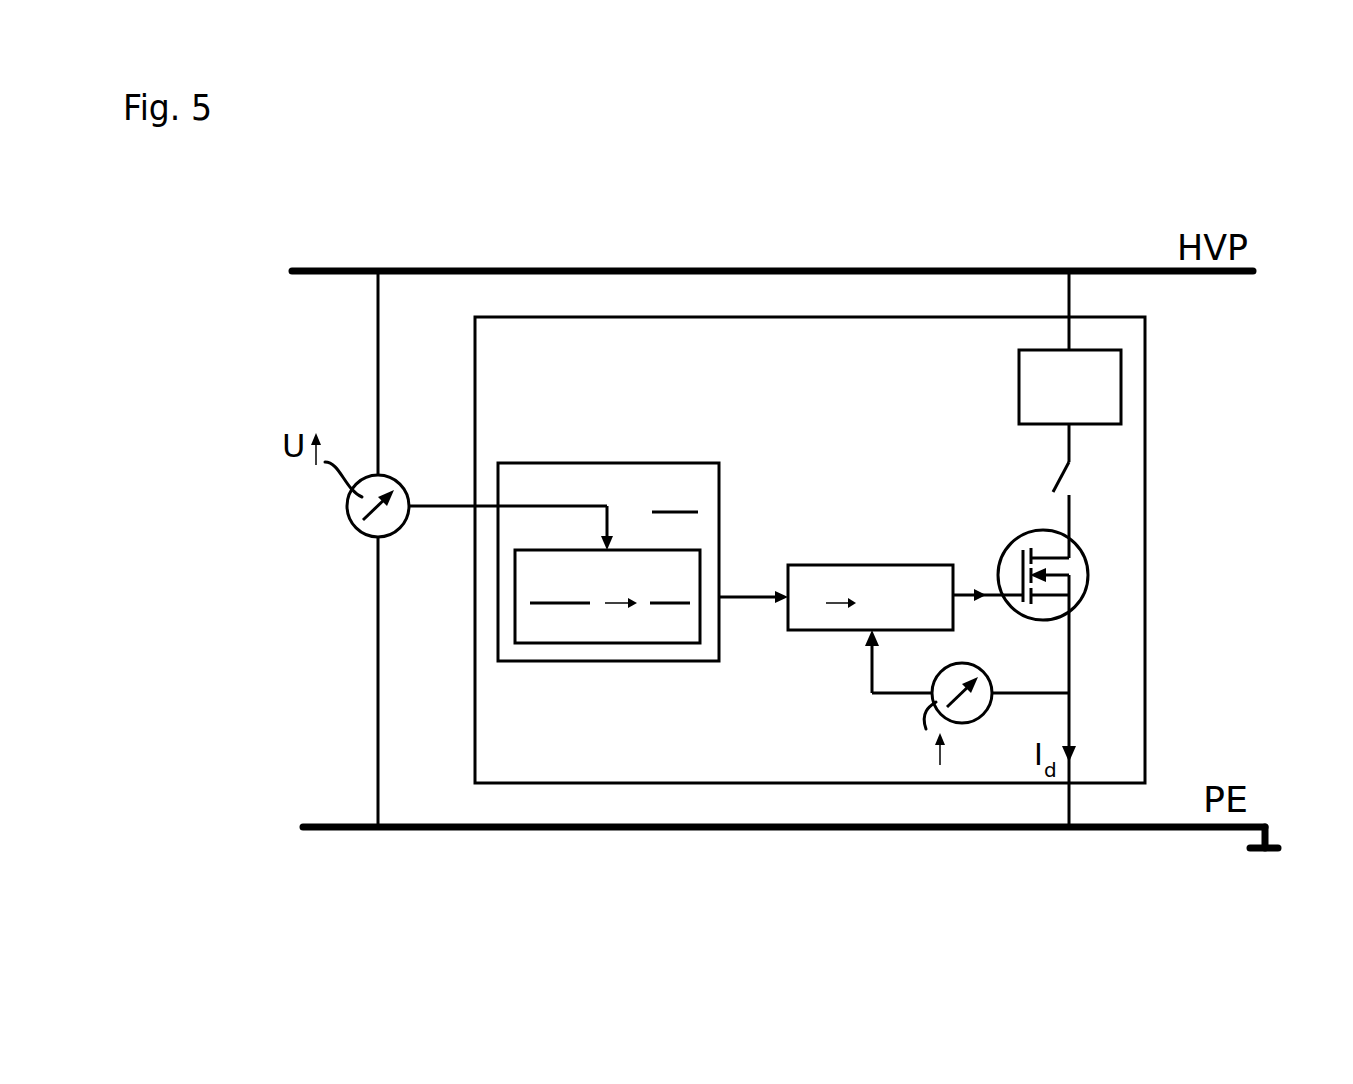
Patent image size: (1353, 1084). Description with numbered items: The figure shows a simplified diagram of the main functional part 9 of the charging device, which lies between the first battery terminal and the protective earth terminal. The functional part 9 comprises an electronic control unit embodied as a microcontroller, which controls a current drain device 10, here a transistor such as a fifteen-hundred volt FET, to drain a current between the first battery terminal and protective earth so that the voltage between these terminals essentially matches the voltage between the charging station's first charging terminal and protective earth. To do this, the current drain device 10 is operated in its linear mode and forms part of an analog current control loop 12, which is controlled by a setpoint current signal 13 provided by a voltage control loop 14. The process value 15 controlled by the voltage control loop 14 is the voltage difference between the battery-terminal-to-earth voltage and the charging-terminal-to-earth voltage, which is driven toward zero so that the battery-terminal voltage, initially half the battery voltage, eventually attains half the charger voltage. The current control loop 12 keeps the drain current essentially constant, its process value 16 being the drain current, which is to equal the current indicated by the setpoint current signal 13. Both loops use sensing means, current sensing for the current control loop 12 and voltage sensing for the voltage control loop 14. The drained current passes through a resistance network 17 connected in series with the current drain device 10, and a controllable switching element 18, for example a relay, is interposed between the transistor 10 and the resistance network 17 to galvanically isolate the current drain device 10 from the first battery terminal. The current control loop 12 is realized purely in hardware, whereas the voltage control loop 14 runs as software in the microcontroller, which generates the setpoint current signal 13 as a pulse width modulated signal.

The functional part 9 is at (628, 318).
The current drain device 10 is at (1010, 543).
The analog current control loop 12 is at (887, 735).
The setpoint current signal 13 is at (763, 595).
The voltage control loop 14 is at (545, 712).
The process value 15 is at (628, 637).
The process value 16 is at (875, 570).
The resistance network 17 is at (1046, 404).
The controllable switching element 18 is at (1057, 472).